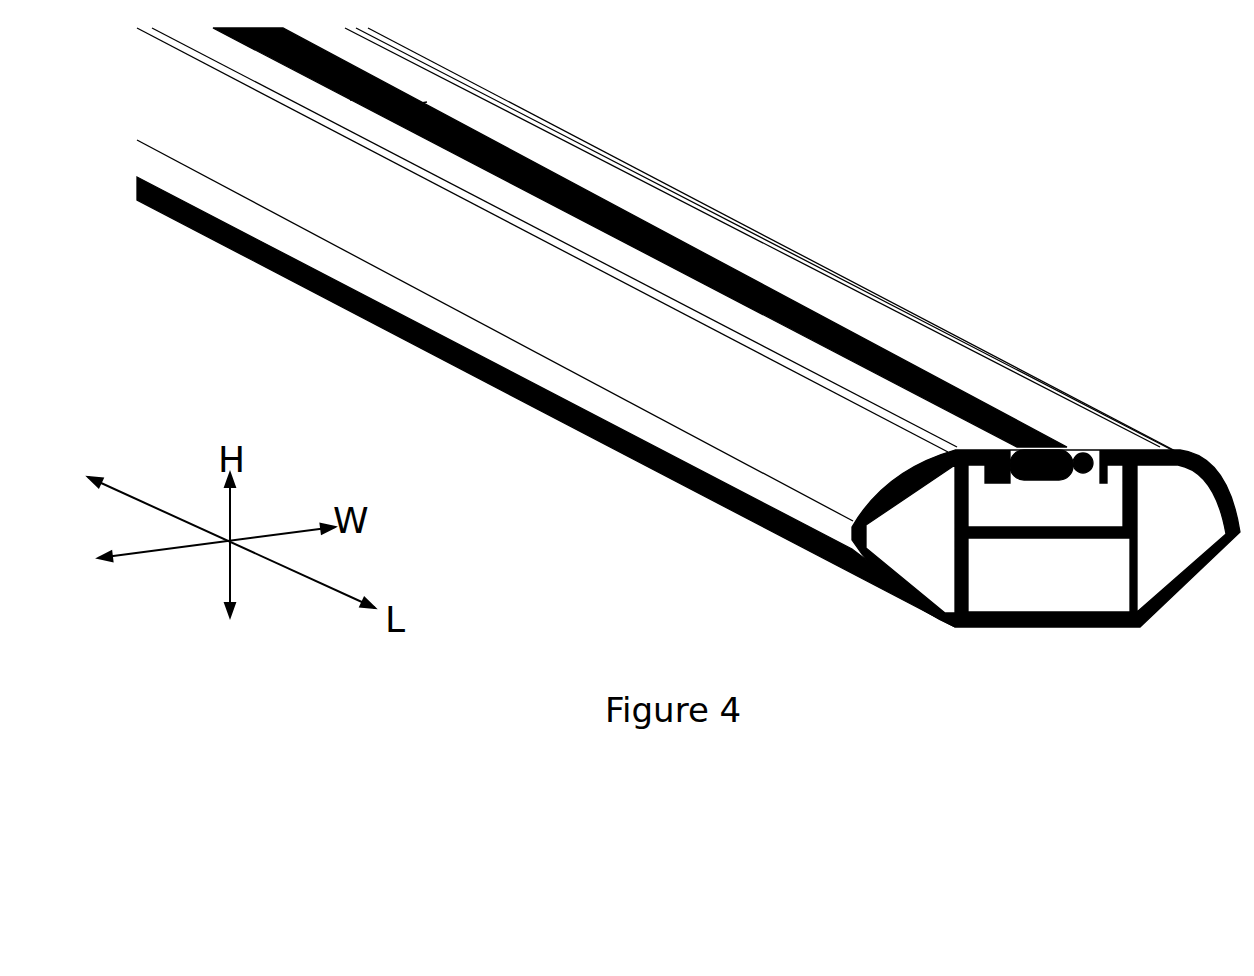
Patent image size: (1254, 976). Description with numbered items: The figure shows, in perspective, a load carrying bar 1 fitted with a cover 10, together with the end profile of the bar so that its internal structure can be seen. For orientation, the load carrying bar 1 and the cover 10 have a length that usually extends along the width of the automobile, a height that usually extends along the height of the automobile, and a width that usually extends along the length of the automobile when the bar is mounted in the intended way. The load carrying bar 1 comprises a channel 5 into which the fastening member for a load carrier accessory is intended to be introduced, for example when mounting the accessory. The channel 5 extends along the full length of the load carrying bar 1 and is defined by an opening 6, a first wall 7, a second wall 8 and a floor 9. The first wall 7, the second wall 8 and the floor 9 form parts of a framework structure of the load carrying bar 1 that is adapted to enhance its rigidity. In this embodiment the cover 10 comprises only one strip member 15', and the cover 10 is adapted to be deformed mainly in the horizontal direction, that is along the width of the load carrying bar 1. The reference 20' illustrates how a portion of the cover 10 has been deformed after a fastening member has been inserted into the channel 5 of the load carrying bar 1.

The load carrying bar 1 is at (577, 318).
The channel 5 is at (1037, 497).
The opening 6 is at (1077, 450).
The first wall 7 is at (967, 497).
The second wall 8 is at (1137, 480).
The floor 9 is at (1037, 530).
The cover 10 is at (760, 293).
The strip member 15' is at (916, 364).
The deformed portion of the cover 20' is at (523, 85).